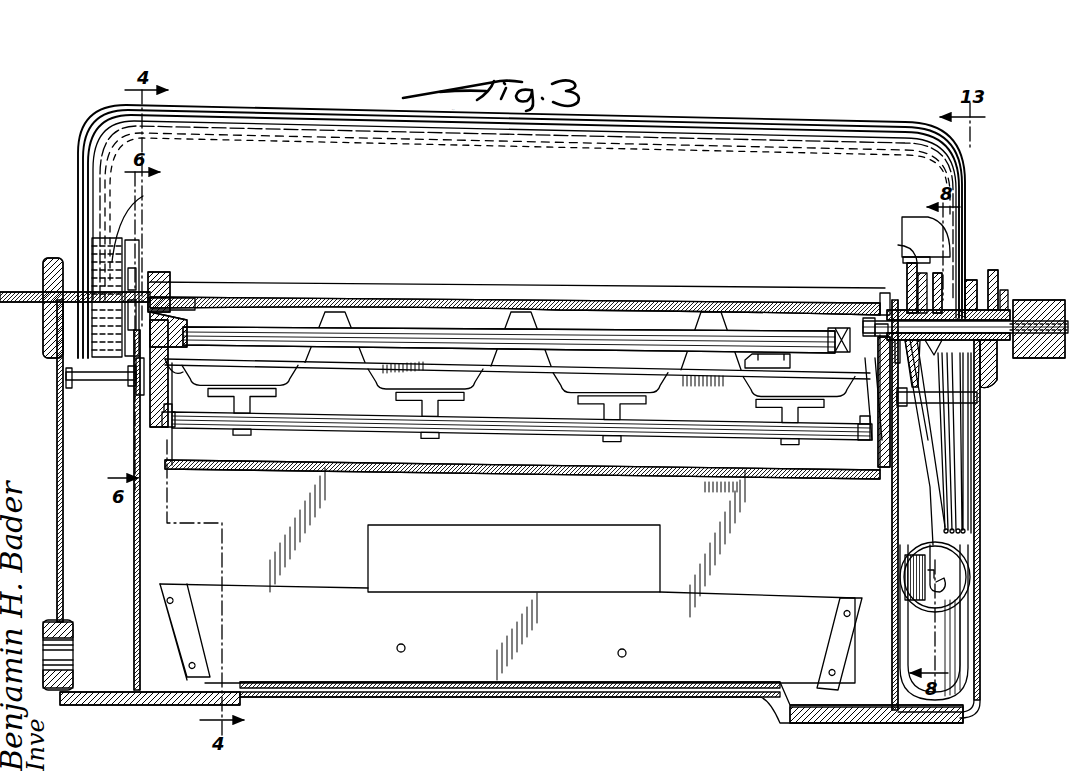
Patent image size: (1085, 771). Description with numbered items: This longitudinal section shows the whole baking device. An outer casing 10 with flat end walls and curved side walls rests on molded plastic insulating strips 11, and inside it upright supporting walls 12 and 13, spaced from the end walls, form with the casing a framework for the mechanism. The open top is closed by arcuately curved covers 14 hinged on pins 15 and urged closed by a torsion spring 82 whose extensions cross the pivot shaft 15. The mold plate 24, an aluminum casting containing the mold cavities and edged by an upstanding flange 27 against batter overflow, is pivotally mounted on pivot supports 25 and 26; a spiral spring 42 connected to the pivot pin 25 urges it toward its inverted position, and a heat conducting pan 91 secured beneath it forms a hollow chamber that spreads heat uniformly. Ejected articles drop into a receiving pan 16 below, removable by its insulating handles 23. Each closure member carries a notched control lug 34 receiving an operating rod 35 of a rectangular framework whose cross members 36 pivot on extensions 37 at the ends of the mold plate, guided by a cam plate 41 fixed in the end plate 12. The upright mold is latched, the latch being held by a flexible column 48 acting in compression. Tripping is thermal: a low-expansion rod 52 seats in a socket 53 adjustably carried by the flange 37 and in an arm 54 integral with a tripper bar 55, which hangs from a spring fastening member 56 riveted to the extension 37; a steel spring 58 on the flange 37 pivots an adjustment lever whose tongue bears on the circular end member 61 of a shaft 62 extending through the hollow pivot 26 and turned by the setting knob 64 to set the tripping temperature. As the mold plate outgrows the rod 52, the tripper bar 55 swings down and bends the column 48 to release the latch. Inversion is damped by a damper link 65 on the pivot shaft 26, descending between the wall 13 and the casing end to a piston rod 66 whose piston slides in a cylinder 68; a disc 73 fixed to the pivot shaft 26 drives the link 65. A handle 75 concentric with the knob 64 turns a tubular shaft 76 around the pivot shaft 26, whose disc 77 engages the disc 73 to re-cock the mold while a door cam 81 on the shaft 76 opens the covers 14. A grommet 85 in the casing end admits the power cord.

The outer casing 10 is at (57, 402).
The insulating strips 11 is at (135, 705).
The upright supporting wall 12 is at (134, 543).
The upright supporting wall 13 is at (892, 538).
The arcuately curved covers 14 is at (720, 136).
The pins 15 is at (104, 386).
The receiving pan 16 is at (725, 603).
The insulating handles 23 is at (538, 543).
The mold plate 24 is at (340, 298).
The pivot support 25 is at (160, 296).
The pivot support 26 is at (903, 308).
The upstanding flange 27 is at (290, 283).
The control lug 34 is at (248, 409).
The operating rod 35 is at (523, 436).
The cross members 36 is at (168, 430).
The extensions 37 is at (168, 396).
The cam plate 41 is at (136, 393).
The spiral spring 42 is at (120, 280).
The flexible column 48 is at (178, 371).
The rod 52 is at (513, 350).
The socket 53 is at (188, 300).
The arm 54 is at (832, 329).
The tripper bar 55 is at (328, 370).
The spring fastening member 56 is at (868, 405).
The steel spring 58 is at (858, 370).
The enlarged circular end member 61 is at (872, 324).
The shaft 62 is at (1003, 320).
The setting knob 64 is at (1035, 358).
The damper link 65 is at (922, 482).
The piston rod 66 is at (945, 586).
The cylinder 68 is at (960, 614).
The disc 73 is at (898, 246).
The handle 75 is at (1004, 290).
The tubular shaft 76 is at (966, 290).
The disc 77 is at (940, 245).
The door cam 81 is at (990, 290).
The torsion spring 82 is at (960, 460).
The grommet 85 is at (73, 634).
The heat conducting pan 91 is at (438, 475).